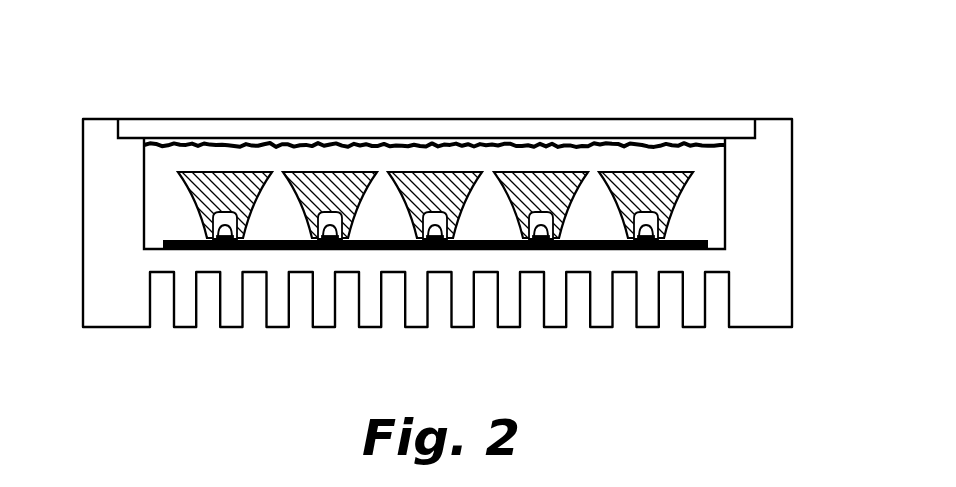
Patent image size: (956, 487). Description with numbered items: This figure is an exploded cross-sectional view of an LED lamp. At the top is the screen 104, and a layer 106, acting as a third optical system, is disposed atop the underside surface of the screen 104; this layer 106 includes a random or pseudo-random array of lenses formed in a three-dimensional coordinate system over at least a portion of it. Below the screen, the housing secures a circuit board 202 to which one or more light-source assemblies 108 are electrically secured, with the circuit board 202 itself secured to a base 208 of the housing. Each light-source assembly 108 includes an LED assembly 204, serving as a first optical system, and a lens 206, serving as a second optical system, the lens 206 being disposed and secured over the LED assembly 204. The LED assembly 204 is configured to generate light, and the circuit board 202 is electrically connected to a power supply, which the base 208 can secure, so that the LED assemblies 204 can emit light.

The screen 104 is at (660, 119).
The layer 106 is at (705, 145).
The light-source assembly 108 is at (620, 160).
The circuit board 202 is at (543, 245).
The LED assembly 204 is at (670, 245).
The lens 206 is at (683, 203).
The base 208 is at (144, 250).